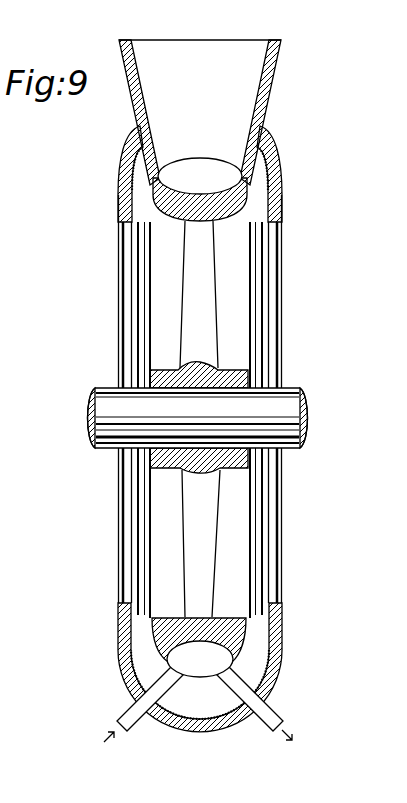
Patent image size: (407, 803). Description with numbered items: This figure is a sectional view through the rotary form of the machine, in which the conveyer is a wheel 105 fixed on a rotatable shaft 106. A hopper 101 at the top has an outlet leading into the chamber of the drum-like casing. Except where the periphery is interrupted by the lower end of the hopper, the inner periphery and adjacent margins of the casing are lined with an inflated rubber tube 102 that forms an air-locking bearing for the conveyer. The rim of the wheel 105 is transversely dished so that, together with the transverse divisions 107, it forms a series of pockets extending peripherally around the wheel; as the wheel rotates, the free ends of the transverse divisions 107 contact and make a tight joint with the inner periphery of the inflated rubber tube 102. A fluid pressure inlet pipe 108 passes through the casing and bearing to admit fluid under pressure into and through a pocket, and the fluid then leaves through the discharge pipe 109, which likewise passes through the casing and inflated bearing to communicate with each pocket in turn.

The hopper 101 is at (200, 112).
The inflated rubber tube 102 is at (132, 179).
The wheel 105 is at (205, 308).
The rotatable shaft 106 is at (303, 422).
The transverse divisions 107 is at (187, 164).
The fluid pressure inlet pipe 108 is at (140, 708).
The discharge pipe 109 is at (268, 708).